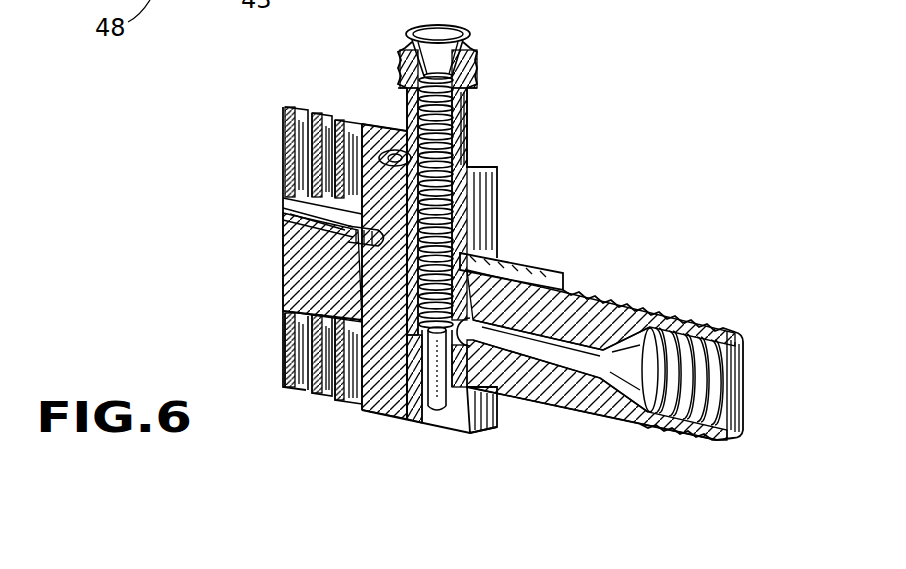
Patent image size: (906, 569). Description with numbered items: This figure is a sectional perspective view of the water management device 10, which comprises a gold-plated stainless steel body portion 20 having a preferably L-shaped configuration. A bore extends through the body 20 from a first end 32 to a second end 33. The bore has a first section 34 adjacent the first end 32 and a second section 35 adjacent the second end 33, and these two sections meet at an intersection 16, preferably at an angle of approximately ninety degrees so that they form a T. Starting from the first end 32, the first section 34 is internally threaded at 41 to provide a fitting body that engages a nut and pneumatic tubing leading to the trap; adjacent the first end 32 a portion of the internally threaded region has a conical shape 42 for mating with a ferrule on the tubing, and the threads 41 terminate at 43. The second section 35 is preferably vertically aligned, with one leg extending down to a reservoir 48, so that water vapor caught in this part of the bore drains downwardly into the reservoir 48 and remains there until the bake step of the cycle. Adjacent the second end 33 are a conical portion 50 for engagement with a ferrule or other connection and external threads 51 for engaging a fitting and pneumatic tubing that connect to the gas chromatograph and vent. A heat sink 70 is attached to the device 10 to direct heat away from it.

The water management device 10 is at (534, 200).
The intersection 16 is at (500, 402).
The body portion 20 is at (520, 258).
The first end 32 is at (745, 385).
The second end 33 is at (432, 228).
The first section of the bore 34 is at (655, 318).
The second section of the bore 35 is at (452, 127).
The internal threads 41 is at (680, 428).
The conical shape 42 is at (605, 410).
The thread termination 43 is at (596, 297).
The reservoir 48 is at (410, 421).
The conical portion 50 is at (428, 30).
The external threads 51 is at (478, 68).
The heat sink 70 is at (360, 124).